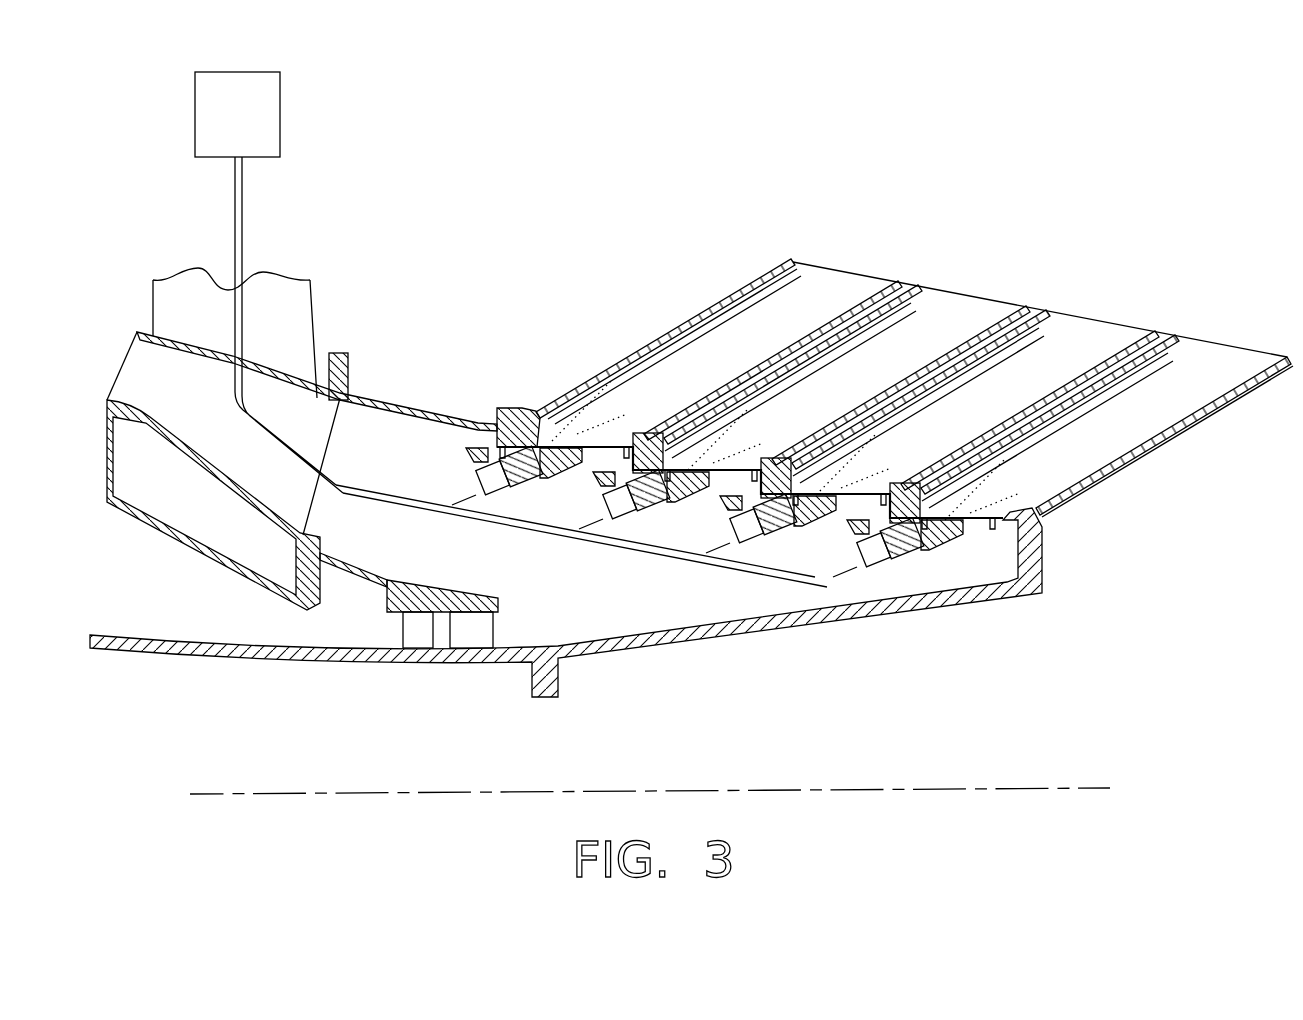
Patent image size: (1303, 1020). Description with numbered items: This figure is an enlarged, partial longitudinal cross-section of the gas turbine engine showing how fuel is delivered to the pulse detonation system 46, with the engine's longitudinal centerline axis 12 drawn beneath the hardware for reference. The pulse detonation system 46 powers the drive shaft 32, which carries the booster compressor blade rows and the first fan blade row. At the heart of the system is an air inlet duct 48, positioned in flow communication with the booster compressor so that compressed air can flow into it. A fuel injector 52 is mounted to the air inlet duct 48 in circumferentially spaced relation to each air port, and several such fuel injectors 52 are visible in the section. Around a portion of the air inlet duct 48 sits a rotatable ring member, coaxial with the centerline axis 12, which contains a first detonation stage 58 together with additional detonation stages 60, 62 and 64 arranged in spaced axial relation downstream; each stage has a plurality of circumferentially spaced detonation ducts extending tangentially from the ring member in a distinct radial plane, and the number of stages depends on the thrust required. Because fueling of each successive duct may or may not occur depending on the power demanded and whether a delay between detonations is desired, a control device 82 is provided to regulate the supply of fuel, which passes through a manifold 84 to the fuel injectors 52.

The centerline axis 12 is at (404, 793).
The drive shaft 32 is at (683, 645).
The pulse detonation system 46 is at (632, 335).
The air inlet duct 48 is at (564, 592).
The fuel injector 52 is at (508, 497).
The detonation stage 58 is at (852, 272).
The detonation stage 60 is at (977, 293).
The detonation stage 62 is at (1108, 318).
The detonation stage 64 is at (1233, 345).
The fuel control device 82 is at (280, 125).
The manifold 84 is at (357, 488).